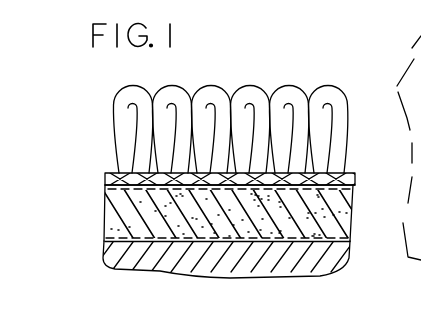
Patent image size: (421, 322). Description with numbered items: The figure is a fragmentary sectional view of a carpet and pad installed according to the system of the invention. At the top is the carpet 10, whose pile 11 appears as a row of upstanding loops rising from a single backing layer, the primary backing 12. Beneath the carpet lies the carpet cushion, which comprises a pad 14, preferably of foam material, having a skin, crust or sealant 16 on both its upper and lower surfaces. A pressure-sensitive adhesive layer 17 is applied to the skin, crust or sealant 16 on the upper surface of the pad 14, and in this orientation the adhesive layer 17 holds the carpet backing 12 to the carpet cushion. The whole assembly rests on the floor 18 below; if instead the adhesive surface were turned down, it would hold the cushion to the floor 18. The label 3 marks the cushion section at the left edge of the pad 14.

The carpet 10 is at (250, 100).
The pile 11 is at (341, 79).
The primary backing 12 is at (353, 174).
The pressure-sensitive adhesive layer 17 is at (356, 185).
The skin, crust or sealant 16 is at (356, 190).
The pad 14 is at (350, 202).
The layer thickness 3 is at (104, 212).
The floor 18 is at (348, 260).